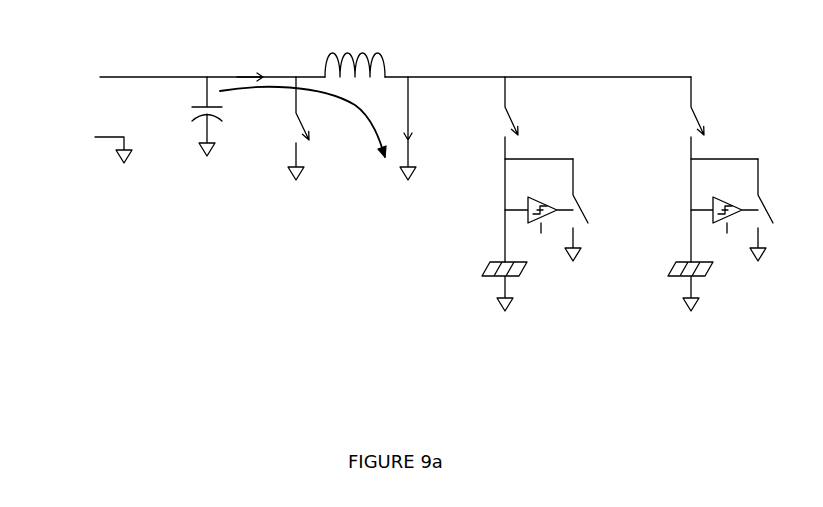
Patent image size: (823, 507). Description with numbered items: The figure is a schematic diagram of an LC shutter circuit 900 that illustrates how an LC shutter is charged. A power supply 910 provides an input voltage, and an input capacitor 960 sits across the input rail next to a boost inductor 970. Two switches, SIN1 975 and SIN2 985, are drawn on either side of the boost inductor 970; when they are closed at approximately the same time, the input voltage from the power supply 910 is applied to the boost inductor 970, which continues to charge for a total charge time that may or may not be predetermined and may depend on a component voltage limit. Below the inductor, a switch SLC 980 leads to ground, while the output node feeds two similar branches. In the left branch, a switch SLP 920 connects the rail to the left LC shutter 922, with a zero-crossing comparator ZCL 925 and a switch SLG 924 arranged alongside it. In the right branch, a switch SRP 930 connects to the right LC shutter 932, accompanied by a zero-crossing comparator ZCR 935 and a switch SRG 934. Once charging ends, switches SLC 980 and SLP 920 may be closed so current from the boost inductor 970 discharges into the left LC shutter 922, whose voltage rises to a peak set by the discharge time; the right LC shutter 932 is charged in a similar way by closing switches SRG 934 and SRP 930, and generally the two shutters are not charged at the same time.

The LC shutter circuit 900 is at (297, 329).
The power supply 910 is at (72, 116).
The input capacitor 960 is at (191, 138).
The boost inductor 970 is at (366, 56).
The switch SIN1 975 is at (250, 57).
The switch SLC 980 is at (297, 128).
The switch SIN2 985 is at (330, 128).
The switch SLP 920 is at (527, 169).
The left LC shutter 922 is at (486, 298).
The switch S_LG 924 is at (591, 210).
The zero crossing comparator ZCL 925 is at (539, 210).
The switch SRP 930 is at (714, 169).
The right LC shutter 932 is at (672, 298).
The switch SRG 934 is at (776, 210).
The zero crossing comparator ZCR 935 is at (724, 210).